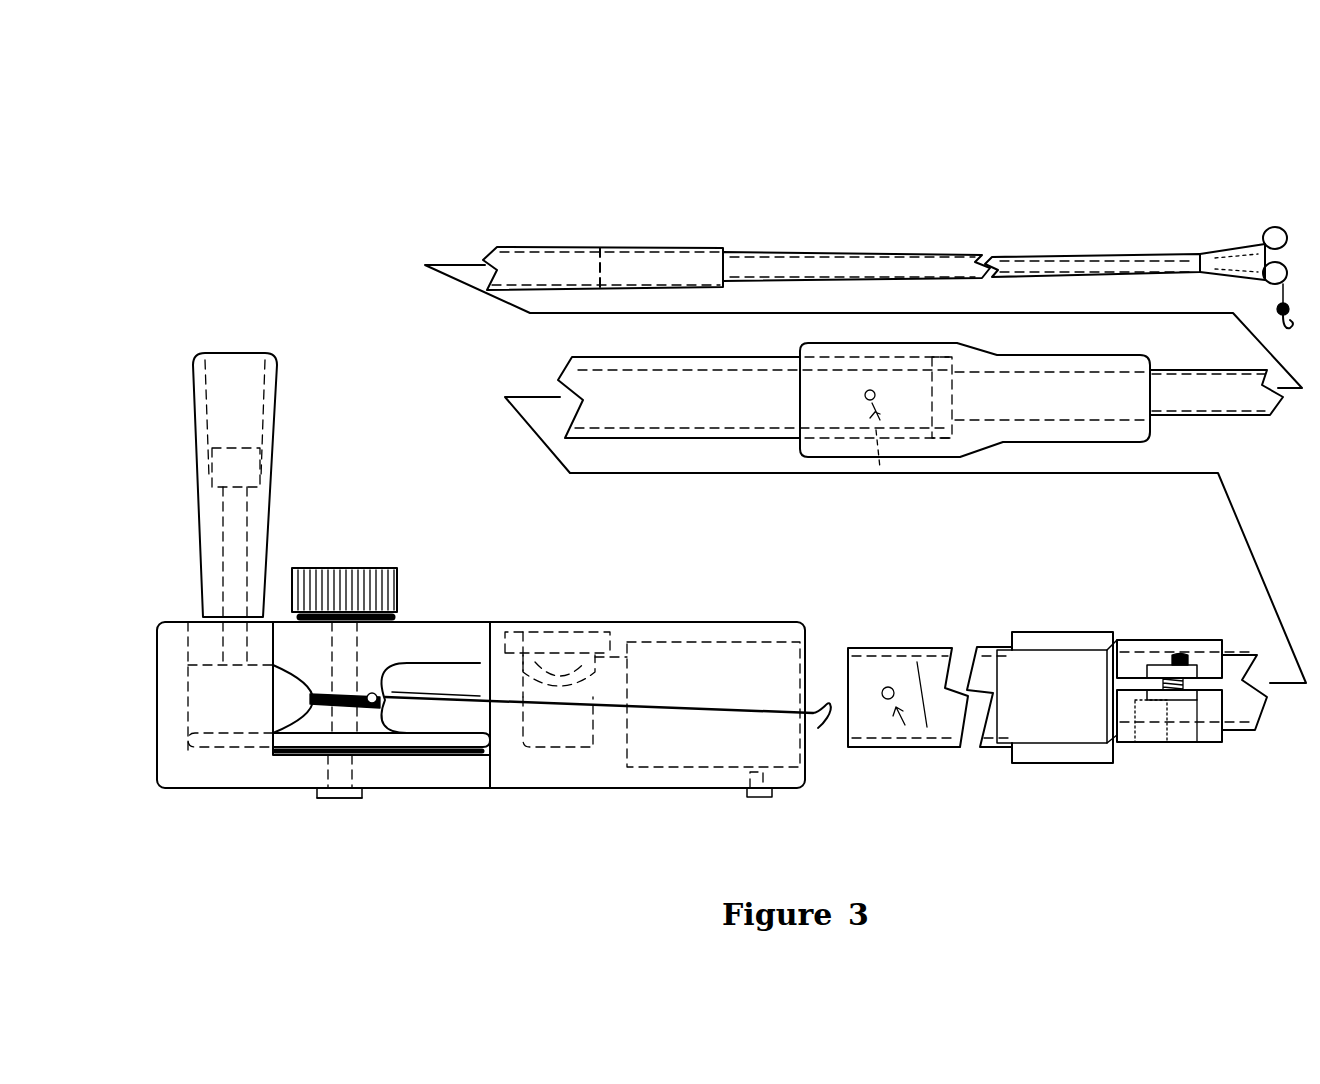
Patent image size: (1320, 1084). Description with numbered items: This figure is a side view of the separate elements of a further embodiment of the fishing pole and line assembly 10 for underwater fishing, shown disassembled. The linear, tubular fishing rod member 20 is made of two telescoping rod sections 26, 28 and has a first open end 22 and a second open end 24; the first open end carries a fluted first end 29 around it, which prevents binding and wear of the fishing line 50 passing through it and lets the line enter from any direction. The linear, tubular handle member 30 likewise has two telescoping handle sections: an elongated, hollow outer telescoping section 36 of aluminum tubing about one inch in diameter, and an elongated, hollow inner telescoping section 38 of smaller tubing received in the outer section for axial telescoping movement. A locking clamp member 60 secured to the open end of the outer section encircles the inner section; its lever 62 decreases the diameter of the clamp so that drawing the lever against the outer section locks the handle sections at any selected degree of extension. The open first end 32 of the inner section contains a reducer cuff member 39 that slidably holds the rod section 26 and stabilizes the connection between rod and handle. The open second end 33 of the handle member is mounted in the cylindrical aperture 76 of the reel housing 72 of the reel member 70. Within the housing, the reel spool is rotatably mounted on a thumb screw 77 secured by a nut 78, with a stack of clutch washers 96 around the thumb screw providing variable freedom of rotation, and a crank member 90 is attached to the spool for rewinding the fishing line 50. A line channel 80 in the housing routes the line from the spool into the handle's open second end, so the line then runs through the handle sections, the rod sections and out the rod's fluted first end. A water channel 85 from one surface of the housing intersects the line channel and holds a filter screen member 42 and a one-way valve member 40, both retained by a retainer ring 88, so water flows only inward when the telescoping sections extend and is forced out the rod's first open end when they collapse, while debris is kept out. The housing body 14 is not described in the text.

The fishing pole and line assembly 10 is at (312, 222).
The tubular fishing rod member 20 is at (730, 193).
The first open end of rod member 22 is at (1287, 262).
The second open end of rod member 24 is at (930, 393).
The telescoping section of rod member 26 is at (545, 260).
The telescoping section of rod member 28 is at (898, 262).
The fluted first end of rod member 29 is at (1240, 247).
The tubular handle member 30 is at (994, 788).
The open first end of handle member 32 is at (953, 400).
The open second end of handle member 33 is at (848, 718).
The outer telescoping section of handle member 36 is at (880, 645).
The inner telescoping section of handle member 38 is at (653, 418).
The reducer cuff member 39 is at (1043, 432).
The one-way valve member 40 is at (562, 675).
The filter screen member 42 is at (550, 648).
The fishing line 50 is at (1273, 288).
The locking clamp member 60 is at (1170, 655).
The lever of clamp member 62 is at (1080, 710).
The reel member 70 is at (226, 824).
The reel housing 72 is at (400, 773).
The housing body 14 is at (413, 635).
The cylindrical aperture in reel housing 76 is at (812, 677).
The thumb screw for reel spool 77 is at (310, 568).
The nut for thumb screw 78 is at (330, 802).
The line channel in reel housing 80 is at (512, 700).
The water channel in reel housing 85 is at (555, 737).
The retainer ring for filter screen and valve members 88 is at (513, 635).
The crank member of reel spool 90 is at (270, 397).
The clutch washers 96 is at (397, 615).